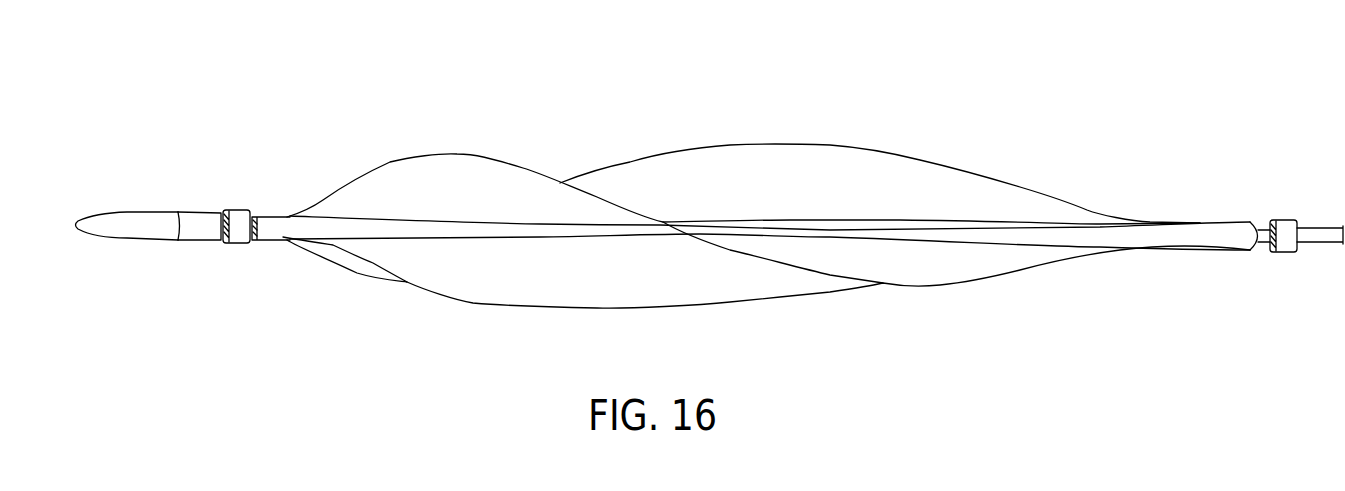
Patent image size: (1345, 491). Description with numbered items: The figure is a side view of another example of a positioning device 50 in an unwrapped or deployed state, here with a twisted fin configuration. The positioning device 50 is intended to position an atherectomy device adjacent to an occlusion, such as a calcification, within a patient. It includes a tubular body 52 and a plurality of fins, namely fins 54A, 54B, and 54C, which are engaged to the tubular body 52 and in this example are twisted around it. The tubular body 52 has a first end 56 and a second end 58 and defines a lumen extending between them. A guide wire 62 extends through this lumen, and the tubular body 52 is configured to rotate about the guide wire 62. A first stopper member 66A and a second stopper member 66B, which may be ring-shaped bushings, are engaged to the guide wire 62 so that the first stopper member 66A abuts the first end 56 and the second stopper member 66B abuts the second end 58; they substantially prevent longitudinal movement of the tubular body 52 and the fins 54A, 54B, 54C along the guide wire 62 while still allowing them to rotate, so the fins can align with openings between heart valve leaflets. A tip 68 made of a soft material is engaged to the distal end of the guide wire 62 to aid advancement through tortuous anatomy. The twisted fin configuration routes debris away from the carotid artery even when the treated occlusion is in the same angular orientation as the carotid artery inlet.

The positioning device 50 is at (885, 71).
The tubular body 52 is at (273, 227).
The fin 54A is at (490, 198).
The fin 54B is at (625, 285).
The fin 54C is at (825, 192).
The first end 56 is at (267, 243).
The second end 58 is at (1247, 250).
The guide wire 62 is at (1342, 245).
The first stopper member 66A is at (240, 238).
The second stopper member 66B is at (1272, 222).
The tip 68 is at (117, 210).